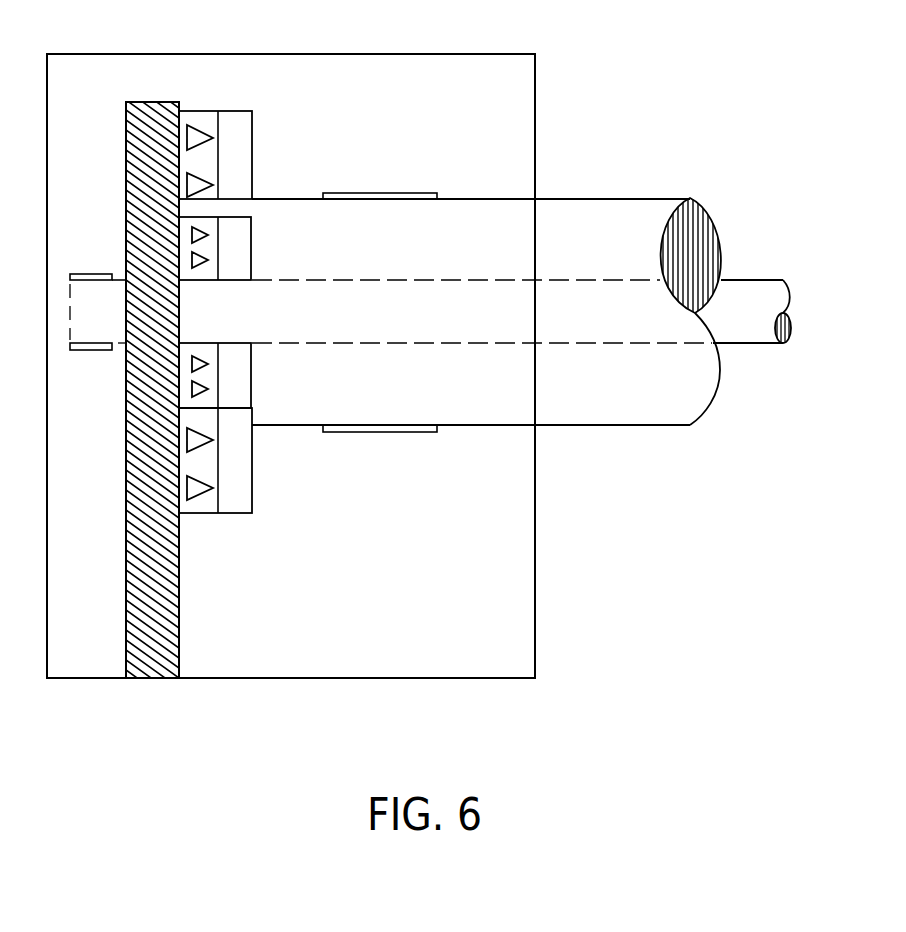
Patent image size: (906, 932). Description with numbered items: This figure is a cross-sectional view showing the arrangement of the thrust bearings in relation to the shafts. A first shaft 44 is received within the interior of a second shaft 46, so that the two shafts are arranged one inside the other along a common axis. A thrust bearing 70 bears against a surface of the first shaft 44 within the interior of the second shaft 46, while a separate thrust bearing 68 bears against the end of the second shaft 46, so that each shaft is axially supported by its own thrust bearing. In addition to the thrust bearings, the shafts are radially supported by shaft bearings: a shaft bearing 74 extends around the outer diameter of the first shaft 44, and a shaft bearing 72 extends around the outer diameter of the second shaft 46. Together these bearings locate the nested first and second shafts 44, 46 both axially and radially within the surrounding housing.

The first shaft 44 is at (742, 278).
The second shaft 46 is at (597, 198).
The thrust bearing 68 is at (255, 160).
The thrust bearing 70 is at (253, 262).
The shaft bearing 72 is at (395, 192).
The shaft bearing 74 is at (83, 273).